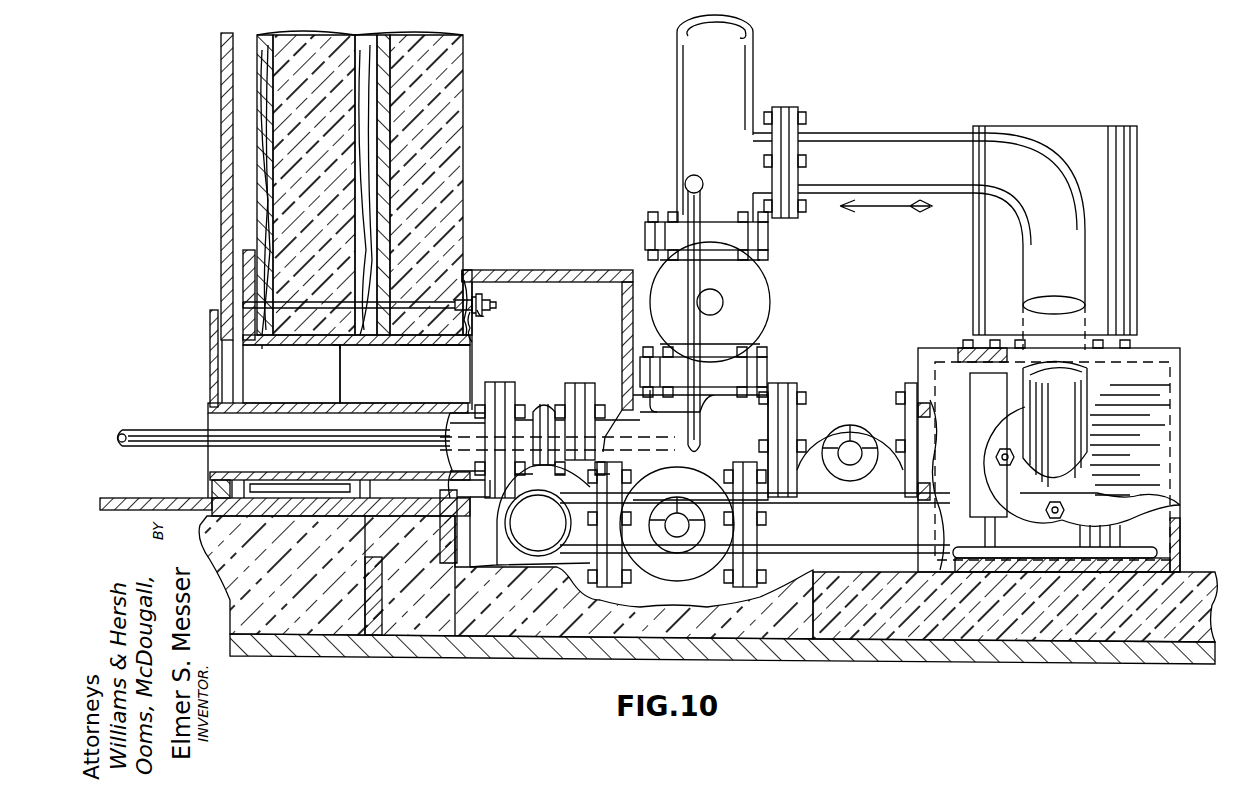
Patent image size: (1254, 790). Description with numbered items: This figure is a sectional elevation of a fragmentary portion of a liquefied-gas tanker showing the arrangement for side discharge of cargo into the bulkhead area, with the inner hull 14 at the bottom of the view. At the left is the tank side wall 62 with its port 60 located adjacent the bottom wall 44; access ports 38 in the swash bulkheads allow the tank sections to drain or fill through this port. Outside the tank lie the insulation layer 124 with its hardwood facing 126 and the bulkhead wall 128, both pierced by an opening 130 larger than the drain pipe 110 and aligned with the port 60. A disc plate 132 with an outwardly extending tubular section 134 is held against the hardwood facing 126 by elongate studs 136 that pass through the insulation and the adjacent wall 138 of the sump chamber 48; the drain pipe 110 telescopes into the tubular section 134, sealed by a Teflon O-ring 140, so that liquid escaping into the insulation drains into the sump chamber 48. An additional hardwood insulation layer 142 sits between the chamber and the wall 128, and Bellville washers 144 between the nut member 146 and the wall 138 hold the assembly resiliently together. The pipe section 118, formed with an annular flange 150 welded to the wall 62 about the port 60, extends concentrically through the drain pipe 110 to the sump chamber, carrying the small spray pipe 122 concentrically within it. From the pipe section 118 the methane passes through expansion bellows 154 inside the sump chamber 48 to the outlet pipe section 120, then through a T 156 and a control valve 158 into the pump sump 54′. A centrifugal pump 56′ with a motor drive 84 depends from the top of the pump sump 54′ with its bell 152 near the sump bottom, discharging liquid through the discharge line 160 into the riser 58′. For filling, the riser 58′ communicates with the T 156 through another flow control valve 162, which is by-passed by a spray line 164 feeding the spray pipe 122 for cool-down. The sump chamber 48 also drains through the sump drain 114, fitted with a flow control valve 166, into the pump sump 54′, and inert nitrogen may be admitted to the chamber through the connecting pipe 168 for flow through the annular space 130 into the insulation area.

The inner hull 14 is at (318, 658).
The access ports 38 is at (462, 540).
The bottom wall 44 is at (158, 498).
The sump chamber 48 is at (532, 262).
The pump sump 54′ is at (1194, 401).
The centrifugal pump 56′ is at (966, 448).
The riser 58′ is at (753, 57).
The port 60 is at (228, 374).
The side wall 62 is at (221, 128).
The motor drive 84 is at (1137, 205).
The drain pipe 110 is at (414, 342).
The sump drain 114 is at (860, 530).
The pipe section 118 is at (384, 406).
The outlet pipe section 120 is at (633, 400).
The spray pipe 122 is at (172, 418).
The insulation layer 124 is at (336, 172).
The hardwood facing 126 is at (257, 198).
The bulkhead wall 128 is at (383, 130).
The opening 130 is at (332, 392).
The disc plate 132 is at (243, 277).
The tubular section 134 is at (265, 347).
The elongate studs 136 is at (496, 305).
The sump chamber wall 138 is at (466, 290).
The Teflon O-ring 140 is at (338, 348).
The additional insulation layer 142 is at (447, 200).
The Bellville washers 144 is at (476, 330).
The nut member 146 is at (484, 316).
The annular flange 150 is at (210, 364).
The bell 152 is at (1145, 546).
The expansion bellows 154 is at (555, 388).
The T 156 is at (751, 442).
The control valve 158 is at (850, 410).
The discharge line 160 is at (905, 120).
The flow control valve 162 is at (757, 298).
The spray line 164 is at (688, 192).
The flow control valve 166 is at (700, 490).
The connecting pipe 168 is at (578, 490).